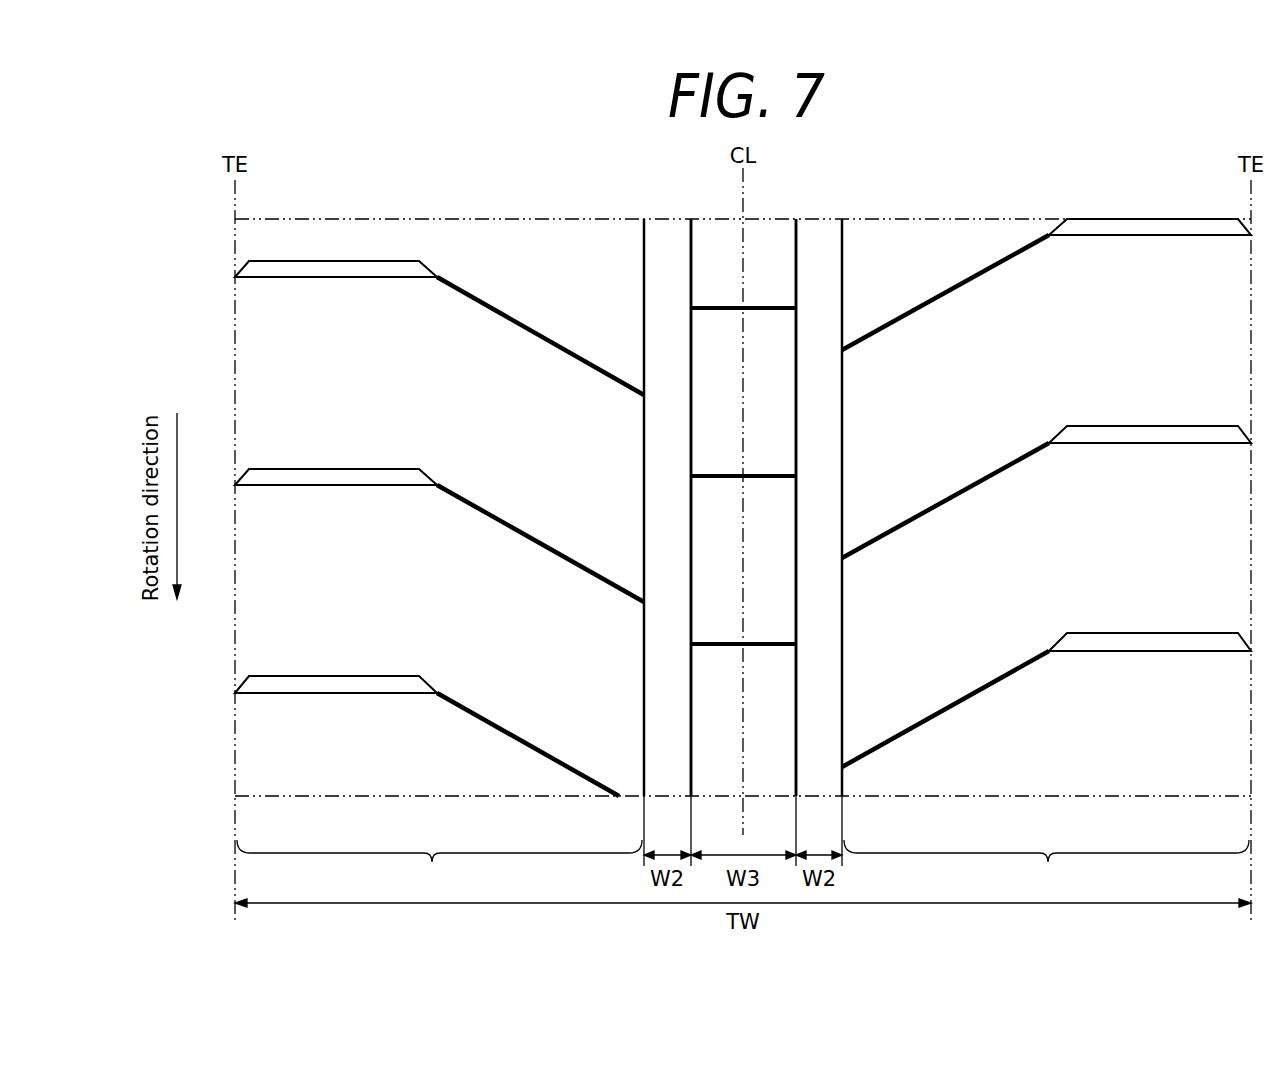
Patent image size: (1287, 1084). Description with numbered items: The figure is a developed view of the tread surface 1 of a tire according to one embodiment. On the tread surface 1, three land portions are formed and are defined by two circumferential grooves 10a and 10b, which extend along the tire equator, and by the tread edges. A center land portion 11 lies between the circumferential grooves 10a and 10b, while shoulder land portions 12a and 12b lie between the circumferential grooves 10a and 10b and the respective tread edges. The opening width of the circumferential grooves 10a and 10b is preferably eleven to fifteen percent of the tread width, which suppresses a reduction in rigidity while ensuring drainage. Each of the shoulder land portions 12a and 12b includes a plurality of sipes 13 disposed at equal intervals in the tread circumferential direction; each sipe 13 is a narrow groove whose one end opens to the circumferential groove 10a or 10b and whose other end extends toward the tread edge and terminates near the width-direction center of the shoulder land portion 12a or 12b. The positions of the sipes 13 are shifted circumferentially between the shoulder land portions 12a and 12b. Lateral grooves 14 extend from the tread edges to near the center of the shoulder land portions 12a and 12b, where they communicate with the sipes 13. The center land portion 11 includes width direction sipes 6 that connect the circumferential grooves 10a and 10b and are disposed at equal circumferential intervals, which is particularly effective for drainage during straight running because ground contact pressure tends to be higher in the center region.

The tread surface 1 is at (1052, 170).
The width direction sipes 6 is at (717, 311).
The circumferential groove 10a is at (666, 235).
The circumferential groove 10b is at (818, 237).
The center land portion 11 is at (723, 242).
The shoulder land portion 12a is at (508, 247).
The shoulder land portion 12b is at (940, 247).
The sipes 13 is at (537, 331).
The lateral grooves 14 is at (343, 280).